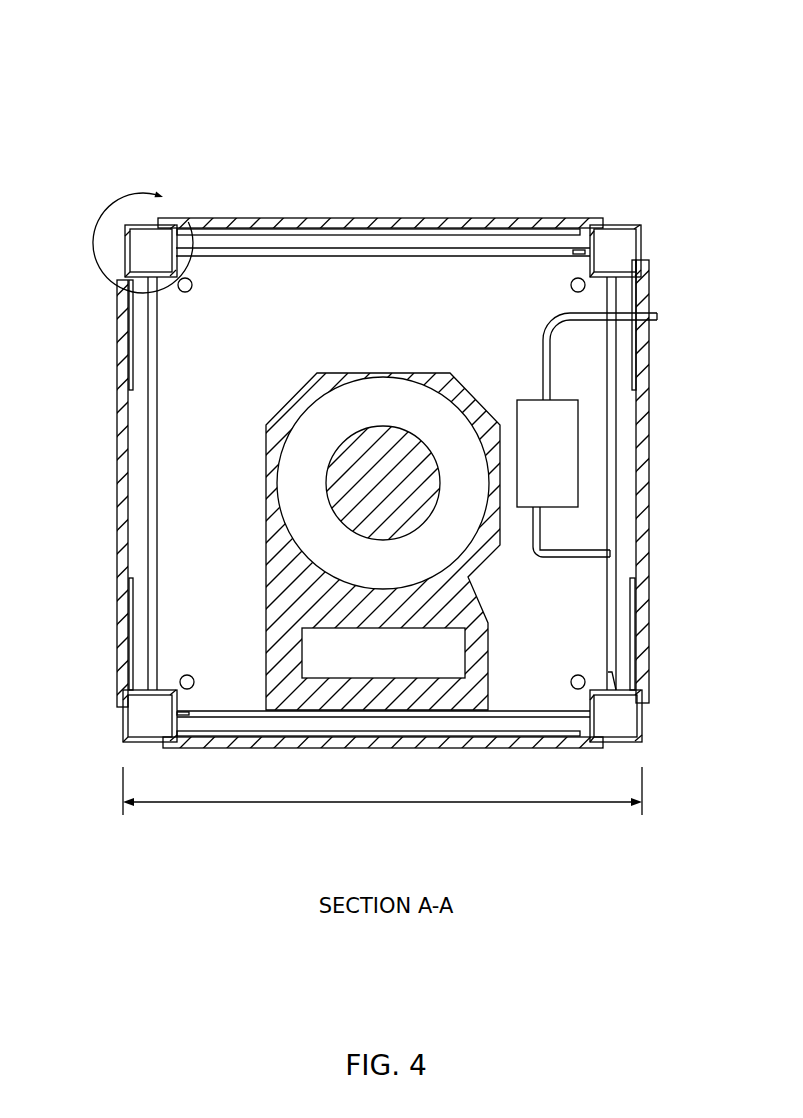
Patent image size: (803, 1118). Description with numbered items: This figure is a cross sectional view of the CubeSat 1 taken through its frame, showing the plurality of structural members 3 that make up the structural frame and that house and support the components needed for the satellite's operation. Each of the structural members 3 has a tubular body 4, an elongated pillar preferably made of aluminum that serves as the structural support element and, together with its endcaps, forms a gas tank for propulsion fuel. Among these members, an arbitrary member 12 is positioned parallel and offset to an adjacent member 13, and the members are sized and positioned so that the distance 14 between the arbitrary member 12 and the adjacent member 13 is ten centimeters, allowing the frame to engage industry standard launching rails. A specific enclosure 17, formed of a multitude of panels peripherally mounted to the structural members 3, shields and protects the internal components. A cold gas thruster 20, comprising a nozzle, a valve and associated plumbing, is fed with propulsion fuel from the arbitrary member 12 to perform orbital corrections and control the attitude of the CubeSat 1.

The CubeSat 1 is at (422, 112).
The structural members 3 is at (131, 205).
The tubular body 4 is at (127, 257).
The arbitrary member 12 is at (108, 722).
The adjacent member 13 is at (658, 718).
The distance 14 is at (470, 802).
The specific enclosure 17 is at (371, 218).
The cold gas thruster 20 is at (514, 390).